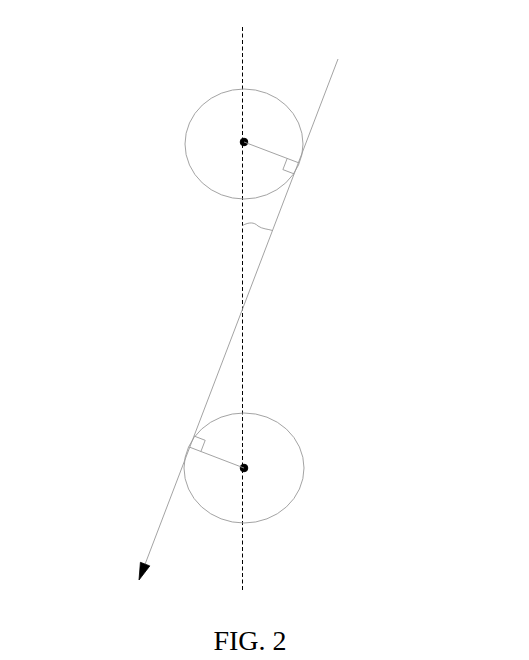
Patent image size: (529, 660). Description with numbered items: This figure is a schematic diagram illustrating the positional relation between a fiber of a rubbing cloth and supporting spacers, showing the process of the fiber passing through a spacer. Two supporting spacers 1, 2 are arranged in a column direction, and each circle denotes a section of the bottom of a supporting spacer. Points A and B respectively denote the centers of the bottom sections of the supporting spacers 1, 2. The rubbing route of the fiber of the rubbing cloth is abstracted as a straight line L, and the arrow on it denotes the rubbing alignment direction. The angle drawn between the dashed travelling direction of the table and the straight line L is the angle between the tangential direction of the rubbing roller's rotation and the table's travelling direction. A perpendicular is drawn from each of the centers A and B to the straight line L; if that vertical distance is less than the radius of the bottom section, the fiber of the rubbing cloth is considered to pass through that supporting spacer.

The supporting spacer 1 is at (145, 118).
The supporting spacer 2 is at (349, 464).
The center of the section of the bottom of the supporting spacer A is at (249, 149).
The center of the section of the bottom of the supporting spacer B is at (239, 460).
The straight line L is at (245, 297).